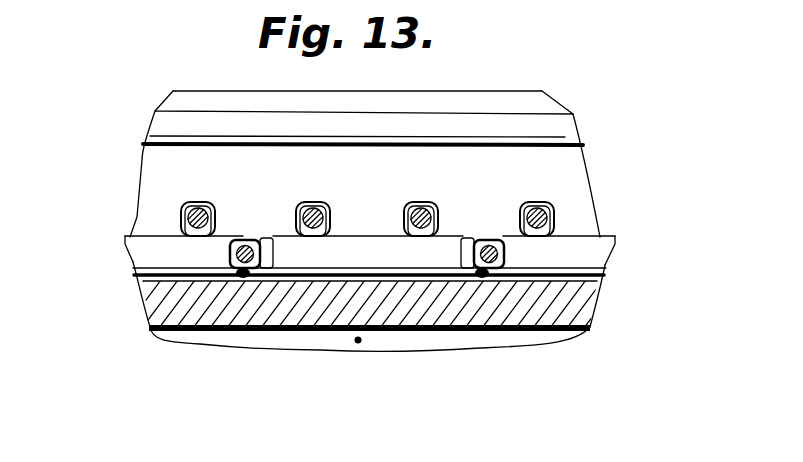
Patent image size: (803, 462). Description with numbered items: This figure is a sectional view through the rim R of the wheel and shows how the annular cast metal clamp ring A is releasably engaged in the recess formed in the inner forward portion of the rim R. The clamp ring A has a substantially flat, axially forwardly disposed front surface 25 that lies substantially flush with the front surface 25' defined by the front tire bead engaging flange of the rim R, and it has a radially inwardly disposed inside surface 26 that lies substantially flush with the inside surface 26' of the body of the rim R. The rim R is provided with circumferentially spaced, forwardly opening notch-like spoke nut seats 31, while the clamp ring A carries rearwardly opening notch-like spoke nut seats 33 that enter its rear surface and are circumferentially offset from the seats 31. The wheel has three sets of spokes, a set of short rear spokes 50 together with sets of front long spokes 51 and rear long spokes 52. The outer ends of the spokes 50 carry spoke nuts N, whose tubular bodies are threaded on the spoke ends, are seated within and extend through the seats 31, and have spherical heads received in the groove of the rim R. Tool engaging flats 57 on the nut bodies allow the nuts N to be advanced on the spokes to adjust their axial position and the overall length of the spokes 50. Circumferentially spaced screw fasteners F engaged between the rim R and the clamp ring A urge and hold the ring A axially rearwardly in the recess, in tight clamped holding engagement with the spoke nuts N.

The rim R is at (556, 63).
The front surface 25 is at (341, 136).
The front surface 25' is at (357, 66).
The inside surface 26 is at (400, 160).
The inside surface 26' is at (369, 350).
The clamp ring A is at (590, 165).
The spoke nut seats 33 is at (190, 237).
The spoke nuts N is at (170, 218).
The front long spokes 51 is at (311, 203).
The rear long spokes 52 is at (204, 203).
The spoke nut seats 31 is at (268, 250).
The tool engaging flats 57 is at (271, 258).
The short rear spokes 50 is at (183, 327).
The screw fasteners F is at (352, 348).